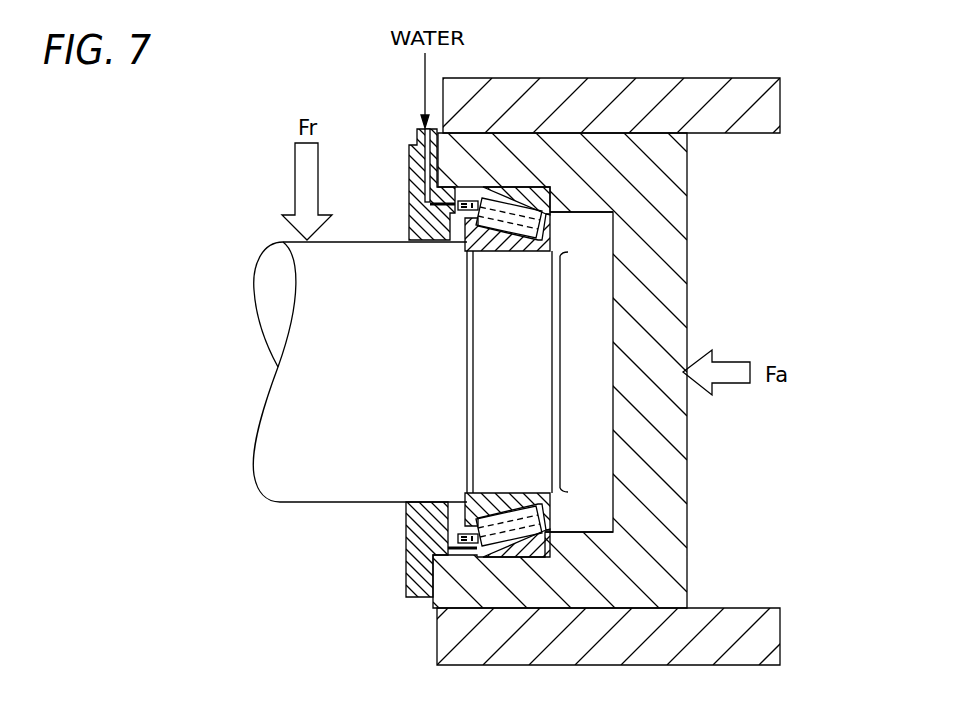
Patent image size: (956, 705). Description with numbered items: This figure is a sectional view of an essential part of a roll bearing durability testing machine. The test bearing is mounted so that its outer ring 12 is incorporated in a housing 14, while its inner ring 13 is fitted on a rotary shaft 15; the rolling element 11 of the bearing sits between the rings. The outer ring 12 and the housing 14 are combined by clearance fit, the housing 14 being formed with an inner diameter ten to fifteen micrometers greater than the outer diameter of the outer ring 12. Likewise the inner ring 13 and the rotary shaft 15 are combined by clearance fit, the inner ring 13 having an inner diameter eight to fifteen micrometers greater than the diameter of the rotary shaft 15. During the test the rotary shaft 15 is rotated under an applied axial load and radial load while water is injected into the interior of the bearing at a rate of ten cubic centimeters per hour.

The outer ring of lower bearing 11 is at (547, 523).
The outer ring 12 is at (548, 213).
The inner ring 13 is at (557, 498).
The housing 14 is at (670, 502).
The rotary shaft 15 is at (333, 478).